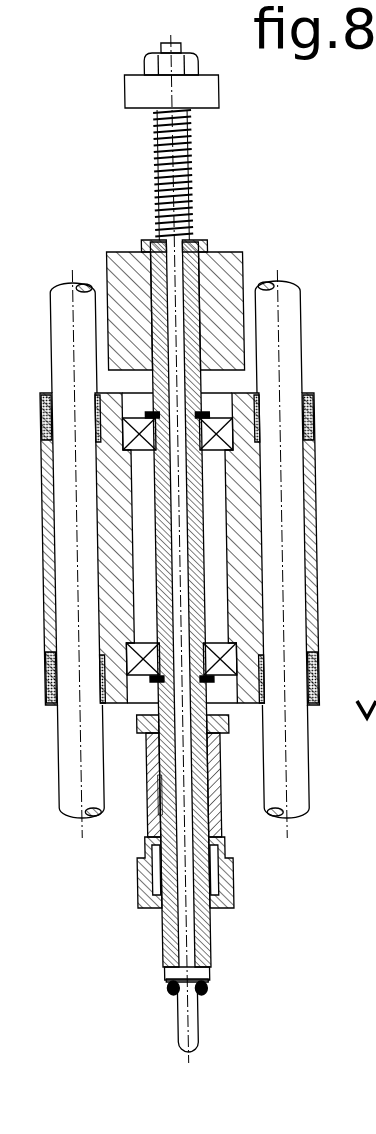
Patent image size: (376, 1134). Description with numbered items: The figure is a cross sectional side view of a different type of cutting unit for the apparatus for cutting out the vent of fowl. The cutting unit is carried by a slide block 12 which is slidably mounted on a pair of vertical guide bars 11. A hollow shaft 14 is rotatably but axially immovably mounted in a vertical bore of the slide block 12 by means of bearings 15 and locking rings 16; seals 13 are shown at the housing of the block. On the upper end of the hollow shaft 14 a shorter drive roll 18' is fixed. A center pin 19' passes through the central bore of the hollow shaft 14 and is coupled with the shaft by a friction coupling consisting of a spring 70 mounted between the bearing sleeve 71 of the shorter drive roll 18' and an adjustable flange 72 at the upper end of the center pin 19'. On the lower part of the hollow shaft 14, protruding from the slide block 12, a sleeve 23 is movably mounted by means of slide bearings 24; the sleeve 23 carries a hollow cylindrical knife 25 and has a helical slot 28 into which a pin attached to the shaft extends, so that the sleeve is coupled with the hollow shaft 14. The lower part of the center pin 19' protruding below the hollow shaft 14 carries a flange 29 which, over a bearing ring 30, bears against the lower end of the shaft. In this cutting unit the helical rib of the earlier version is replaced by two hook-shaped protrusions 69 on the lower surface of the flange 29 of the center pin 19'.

The adjustable flange 72 is at (204, 95).
The spring 70 is at (183, 148).
The bearing sleeve 71 is at (189, 241).
The shorter drive roll 18' is at (199, 296).
The guide bars 11 is at (285, 300).
The locking rings 16 is at (195, 413).
The seal 13 is at (302, 412).
The bearings 15 is at (217, 432).
The slide block 12 is at (299, 497).
The hollow shaft 14 is at (188, 568).
The slide bearings 24 is at (198, 755).
The sleeve 23 is at (202, 790).
The helical slot 28 is at (145, 797).
The hollow cylindrical knife 25 is at (208, 885).
The bearing ring 30 is at (189, 972).
The flange 29 is at (154, 979).
The hook-shaped protrusions 69 is at (156, 993).
The center pin 19' is at (212, 1022).